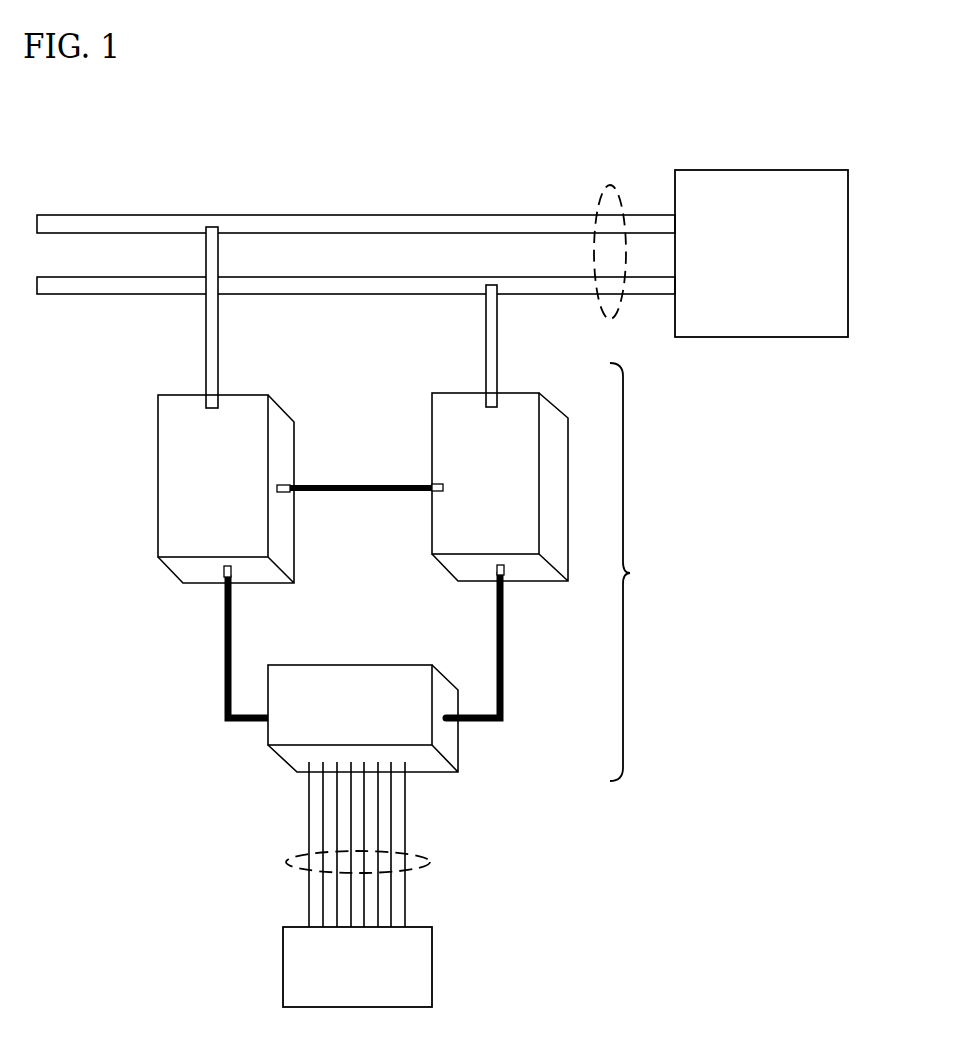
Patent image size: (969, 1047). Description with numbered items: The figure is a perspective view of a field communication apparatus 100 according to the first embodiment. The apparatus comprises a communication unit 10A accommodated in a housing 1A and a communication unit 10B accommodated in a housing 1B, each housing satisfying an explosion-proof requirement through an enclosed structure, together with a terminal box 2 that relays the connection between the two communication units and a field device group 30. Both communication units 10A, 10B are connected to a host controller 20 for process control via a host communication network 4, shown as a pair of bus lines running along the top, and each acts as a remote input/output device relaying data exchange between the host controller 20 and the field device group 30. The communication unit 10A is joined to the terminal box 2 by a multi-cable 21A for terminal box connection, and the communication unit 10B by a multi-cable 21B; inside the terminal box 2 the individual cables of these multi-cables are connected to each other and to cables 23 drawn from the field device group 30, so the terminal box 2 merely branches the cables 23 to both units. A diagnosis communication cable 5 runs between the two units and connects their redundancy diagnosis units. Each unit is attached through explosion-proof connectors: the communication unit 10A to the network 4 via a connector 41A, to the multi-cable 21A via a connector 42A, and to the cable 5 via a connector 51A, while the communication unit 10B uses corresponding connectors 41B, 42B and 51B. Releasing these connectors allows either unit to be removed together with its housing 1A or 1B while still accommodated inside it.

The housing 1A is at (191, 465).
The housing 1B is at (466, 463).
The terminal box 2 is at (378, 690).
The host communication network 4 is at (610, 185).
The diagnosis communication cable 5 is at (353, 486).
The communication unit 10A is at (196, 505).
The communication unit 10B is at (471, 503).
The host controller for process control 20 is at (803, 170).
The multi-cable for terminal box connection 21A is at (222, 678).
The multi-cable for terminal box connection 21B is at (504, 662).
The cables 23 is at (432, 862).
The field device group 30 is at (432, 965).
The connector 41A is at (219, 405).
The connector 41B is at (497, 401).
The connector 42A is at (231, 570).
The connector 42B is at (504, 570).
The connector 51A is at (289, 493).
The connector 51B is at (437, 483).
The field communication apparatus 100 is at (644, 572).